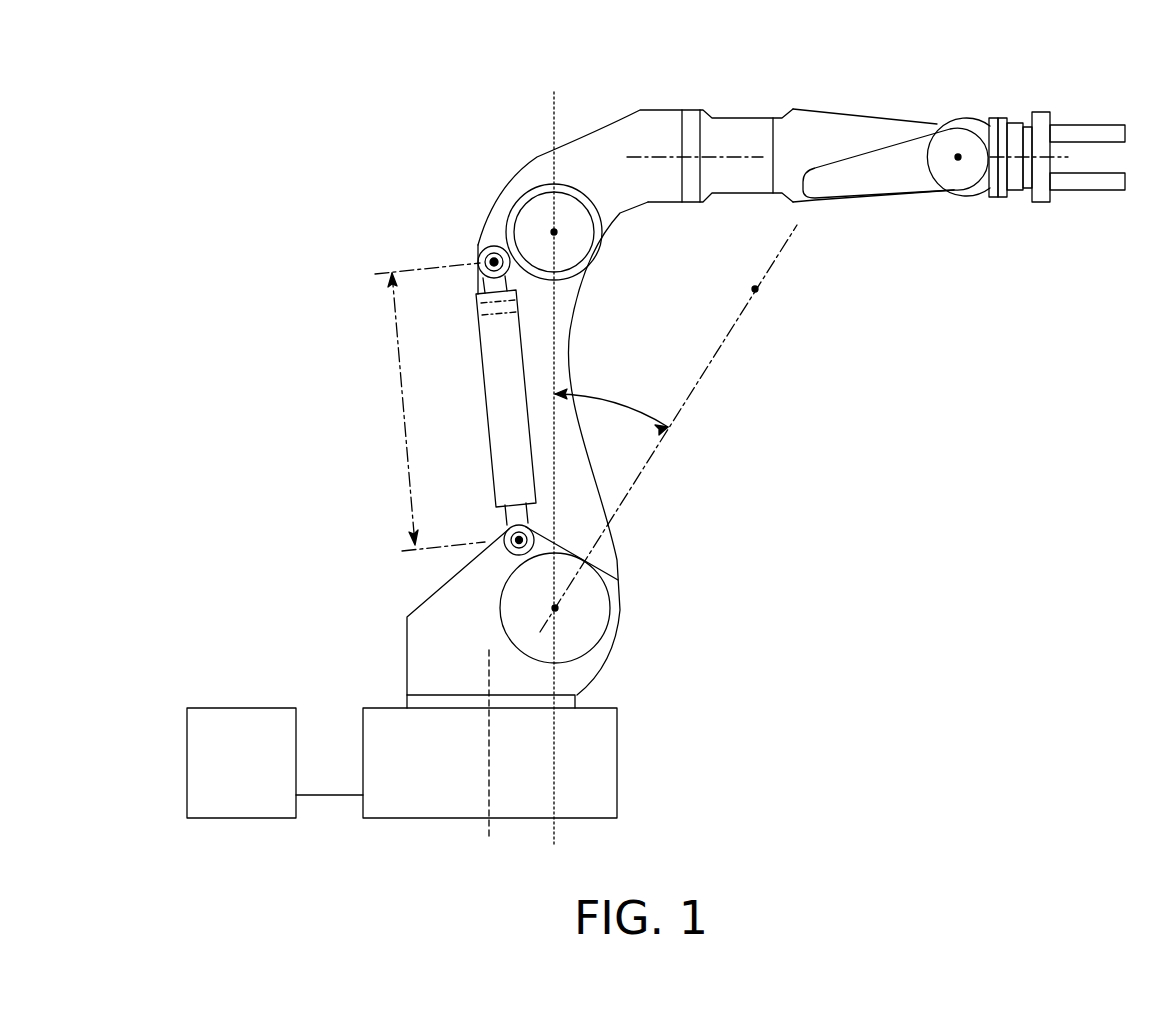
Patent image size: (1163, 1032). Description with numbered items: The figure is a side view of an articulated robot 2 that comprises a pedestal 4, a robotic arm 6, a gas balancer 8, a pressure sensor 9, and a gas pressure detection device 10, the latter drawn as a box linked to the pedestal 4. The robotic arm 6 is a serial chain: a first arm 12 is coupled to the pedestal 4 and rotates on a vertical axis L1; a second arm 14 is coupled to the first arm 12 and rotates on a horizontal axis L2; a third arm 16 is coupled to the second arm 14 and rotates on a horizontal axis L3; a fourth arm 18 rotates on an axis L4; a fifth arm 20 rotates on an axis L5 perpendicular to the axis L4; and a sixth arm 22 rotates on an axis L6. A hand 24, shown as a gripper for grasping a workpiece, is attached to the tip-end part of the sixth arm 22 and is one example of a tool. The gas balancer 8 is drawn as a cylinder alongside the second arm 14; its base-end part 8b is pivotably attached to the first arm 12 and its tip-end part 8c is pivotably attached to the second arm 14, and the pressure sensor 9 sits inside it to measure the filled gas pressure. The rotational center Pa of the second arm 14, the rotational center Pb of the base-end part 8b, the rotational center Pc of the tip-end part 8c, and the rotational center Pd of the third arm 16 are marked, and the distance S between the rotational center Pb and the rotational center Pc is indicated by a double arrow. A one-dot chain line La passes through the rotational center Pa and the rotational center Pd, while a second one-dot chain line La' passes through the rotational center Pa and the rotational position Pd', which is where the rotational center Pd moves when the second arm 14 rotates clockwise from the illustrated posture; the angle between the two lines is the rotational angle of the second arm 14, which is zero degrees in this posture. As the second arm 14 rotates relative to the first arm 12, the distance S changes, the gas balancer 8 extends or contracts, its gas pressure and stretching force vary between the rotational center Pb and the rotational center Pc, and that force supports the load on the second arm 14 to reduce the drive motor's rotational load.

The robot 2 is at (211, 128).
The pedestal 4 is at (602, 765).
The robotic arm 6 is at (753, 484).
The gas balancer 8 is at (497, 387).
The base-end part 8b is at (507, 528).
The tip-end part 8c is at (480, 272).
The pressure sensor 9 is at (478, 325).
The gas pressure detection device 10 is at (245, 726).
The first arm 12 is at (435, 613).
The second arm 14 is at (582, 488).
The third arm 16 is at (607, 150).
The fourth arm 18 is at (837, 122).
The fifth arm 20 is at (996, 118).
The sixth arm 22 is at (1028, 190).
The hand 24 is at (1047, 198).
The vertical axis L1 is at (483, 675).
The horizontal axis L2 is at (580, 590).
The horizontal axis L3 is at (590, 253).
The axis L4 is at (742, 157).
The axis L5 is at (958, 160).
The axis L6 is at (1066, 157).
The straight line La is at (509, 467).
The straight line La' is at (702, 428).
The rotational center Pa is at (557, 610).
The rotational center Pb is at (536, 527).
The rotational center Pc is at (478, 252).
The rotational center Pd is at (625, 238).
The rotational position Pd' is at (795, 316).
The distance S is at (430, 407).